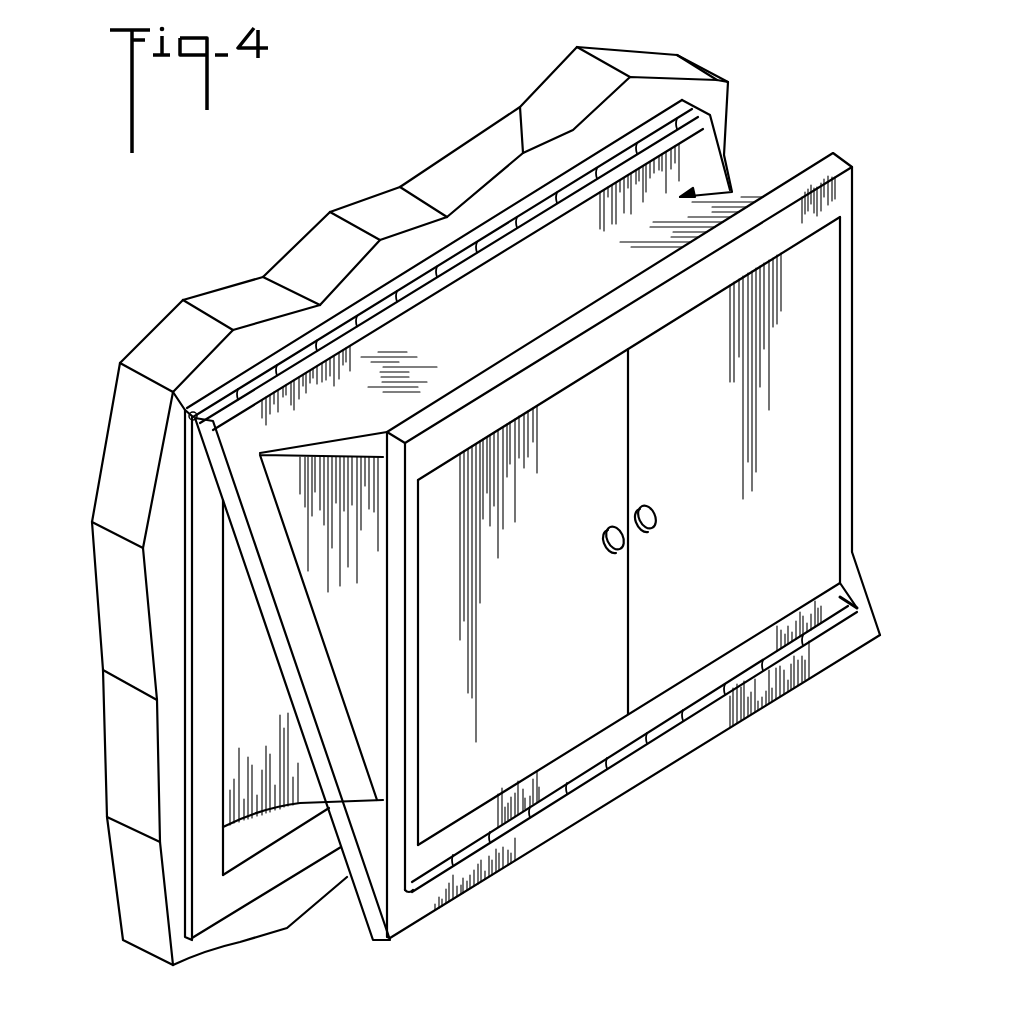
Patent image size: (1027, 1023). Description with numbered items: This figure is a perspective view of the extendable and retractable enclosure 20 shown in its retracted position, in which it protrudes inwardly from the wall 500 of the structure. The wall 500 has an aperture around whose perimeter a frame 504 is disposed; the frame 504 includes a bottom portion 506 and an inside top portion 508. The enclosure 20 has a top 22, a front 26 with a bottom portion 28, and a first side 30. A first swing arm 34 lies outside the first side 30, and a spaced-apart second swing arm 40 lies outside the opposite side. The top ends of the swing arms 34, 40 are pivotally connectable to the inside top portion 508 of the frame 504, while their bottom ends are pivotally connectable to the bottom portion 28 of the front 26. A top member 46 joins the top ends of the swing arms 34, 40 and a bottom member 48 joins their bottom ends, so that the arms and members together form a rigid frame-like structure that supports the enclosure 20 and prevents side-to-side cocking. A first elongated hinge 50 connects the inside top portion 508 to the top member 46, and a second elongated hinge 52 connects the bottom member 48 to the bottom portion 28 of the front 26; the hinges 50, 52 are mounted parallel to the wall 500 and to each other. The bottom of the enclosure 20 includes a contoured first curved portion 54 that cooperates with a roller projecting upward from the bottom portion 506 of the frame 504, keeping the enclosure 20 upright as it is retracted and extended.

The extendable and retractable enclosure 20 is at (657, 519).
The top 22 is at (317, 443).
The front 26 is at (813, 218).
The bottom portion of front 28 is at (840, 597).
The first side 30 is at (240, 673).
The first swing arm 34 is at (287, 597).
The second swing arm 40 is at (860, 578).
The top member 46 is at (468, 285).
The bottom member 48 is at (590, 753).
The first elongated hinge 50 is at (480, 283).
The second elongated hinge 52 is at (707, 707).
The first curved portion 54 is at (303, 810).
The wall 500 is at (227, 305).
The frame 504 is at (203, 850).
The bottom portion of frame 506 is at (257, 877).
The inside top portion of frame 508 is at (198, 443).